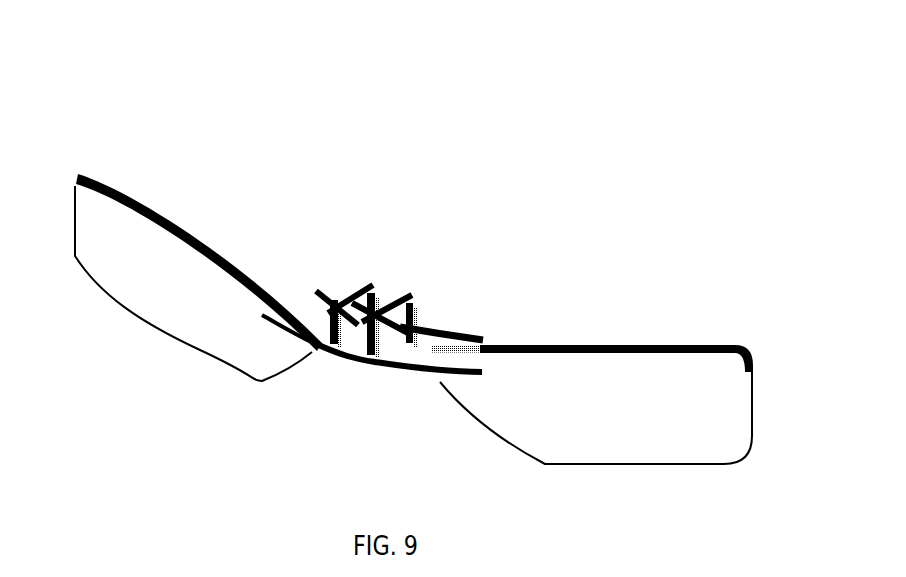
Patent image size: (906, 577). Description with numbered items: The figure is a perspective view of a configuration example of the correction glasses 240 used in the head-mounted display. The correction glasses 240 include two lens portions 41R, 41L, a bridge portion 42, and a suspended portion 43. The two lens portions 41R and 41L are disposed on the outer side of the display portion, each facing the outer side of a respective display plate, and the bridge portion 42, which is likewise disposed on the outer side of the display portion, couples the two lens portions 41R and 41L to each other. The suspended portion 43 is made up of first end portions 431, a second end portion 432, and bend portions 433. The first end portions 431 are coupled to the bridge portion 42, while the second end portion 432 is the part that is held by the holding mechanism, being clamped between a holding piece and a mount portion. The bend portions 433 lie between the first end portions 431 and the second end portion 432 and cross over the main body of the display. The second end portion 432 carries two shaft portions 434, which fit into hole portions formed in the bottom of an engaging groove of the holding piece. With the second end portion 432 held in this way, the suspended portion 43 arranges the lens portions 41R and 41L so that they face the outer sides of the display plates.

The correction glasses 240 is at (598, 200).
The lens portion 41R is at (163, 252).
The lens portion 41L is at (648, 370).
The bridge portion 42 is at (308, 349).
The suspended portion 43 is at (477, 217).
The first end portions 431 is at (370, 344).
The second end portion 432 is at (433, 323).
The bend portions 433 is at (405, 298).
The shaft portions 434 is at (408, 344).